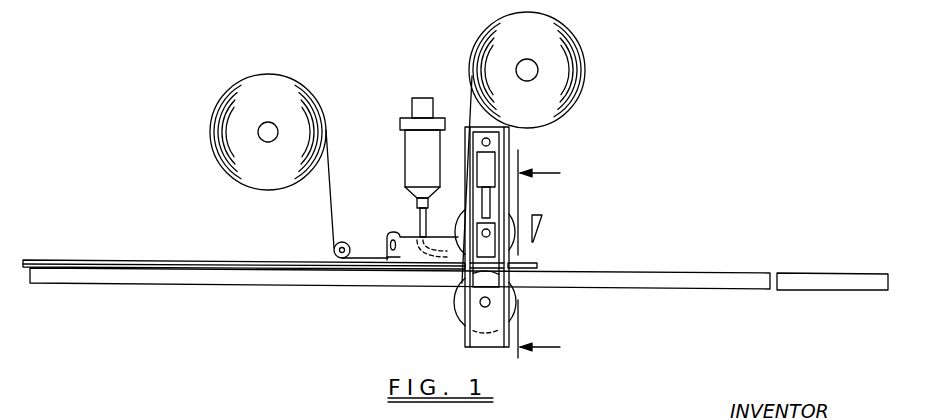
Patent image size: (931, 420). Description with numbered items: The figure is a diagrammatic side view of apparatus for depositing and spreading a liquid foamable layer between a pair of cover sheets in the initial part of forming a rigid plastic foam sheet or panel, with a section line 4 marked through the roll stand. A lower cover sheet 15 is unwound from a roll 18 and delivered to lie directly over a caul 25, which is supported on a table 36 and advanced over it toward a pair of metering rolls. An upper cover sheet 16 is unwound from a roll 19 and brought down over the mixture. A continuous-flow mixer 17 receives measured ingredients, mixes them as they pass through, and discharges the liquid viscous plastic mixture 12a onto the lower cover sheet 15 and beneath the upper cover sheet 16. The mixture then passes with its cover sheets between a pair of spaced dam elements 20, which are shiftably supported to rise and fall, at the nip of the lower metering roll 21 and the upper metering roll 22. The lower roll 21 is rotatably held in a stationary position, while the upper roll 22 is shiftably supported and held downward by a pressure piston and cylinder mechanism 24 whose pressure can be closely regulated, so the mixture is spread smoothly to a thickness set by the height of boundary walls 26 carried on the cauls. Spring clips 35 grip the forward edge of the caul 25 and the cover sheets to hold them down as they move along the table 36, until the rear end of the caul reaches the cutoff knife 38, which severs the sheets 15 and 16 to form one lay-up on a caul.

The section line 4- 4 is at (547, 255).
The liquid plastic mixture 12a is at (419, 222).
The lower cover sheet 15 is at (330, 188).
The upper cover sheet 16 is at (468, 113).
The mixer 17 is at (418, 158).
The roll 18 is at (265, 138).
The roll 19 is at (531, 75).
The dam elements 20 is at (412, 250).
The lower metering roll 21 is at (452, 307).
The upper metering roll 22 is at (510, 228).
The pressure piston and cylinder mechanism 24 is at (491, 157).
The caul 25 is at (268, 270).
The boundary walls 26 is at (105, 260).
The spring clips 35 is at (532, 258).
The table 36 is at (153, 273).
The cutoff knife 38 is at (543, 224).